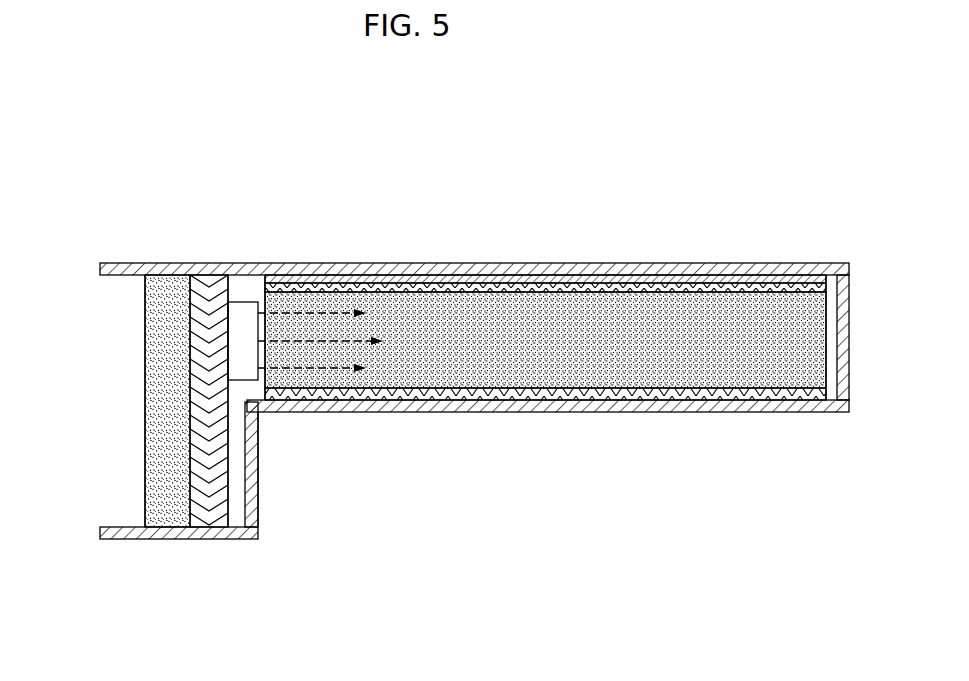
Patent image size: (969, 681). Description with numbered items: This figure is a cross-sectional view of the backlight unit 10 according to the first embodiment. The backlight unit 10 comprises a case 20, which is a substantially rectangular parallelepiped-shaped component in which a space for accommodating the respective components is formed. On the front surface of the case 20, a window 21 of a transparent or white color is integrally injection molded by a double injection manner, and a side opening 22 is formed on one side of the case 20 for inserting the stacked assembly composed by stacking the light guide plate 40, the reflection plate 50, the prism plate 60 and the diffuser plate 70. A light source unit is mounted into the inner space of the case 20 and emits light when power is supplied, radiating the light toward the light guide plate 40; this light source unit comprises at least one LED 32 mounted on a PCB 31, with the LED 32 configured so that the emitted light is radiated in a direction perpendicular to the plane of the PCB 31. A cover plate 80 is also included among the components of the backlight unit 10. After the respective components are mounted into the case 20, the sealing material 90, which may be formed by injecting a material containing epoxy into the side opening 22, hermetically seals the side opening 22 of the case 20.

The backlight unit 10 is at (176, 182).
The case 20 is at (453, 412).
The window 21 is at (437, 266).
The side opening 22 is at (125, 527).
The PCB 31 is at (218, 452).
The LED 32 is at (242, 312).
The light guide plate 40 is at (700, 310).
The reflection plate 50 is at (542, 396).
The prism plate 60 is at (610, 288).
The diffuser plate 70 is at (525, 279).
The cover plate 80 is at (195, 520).
The sealing material 90 is at (173, 520).